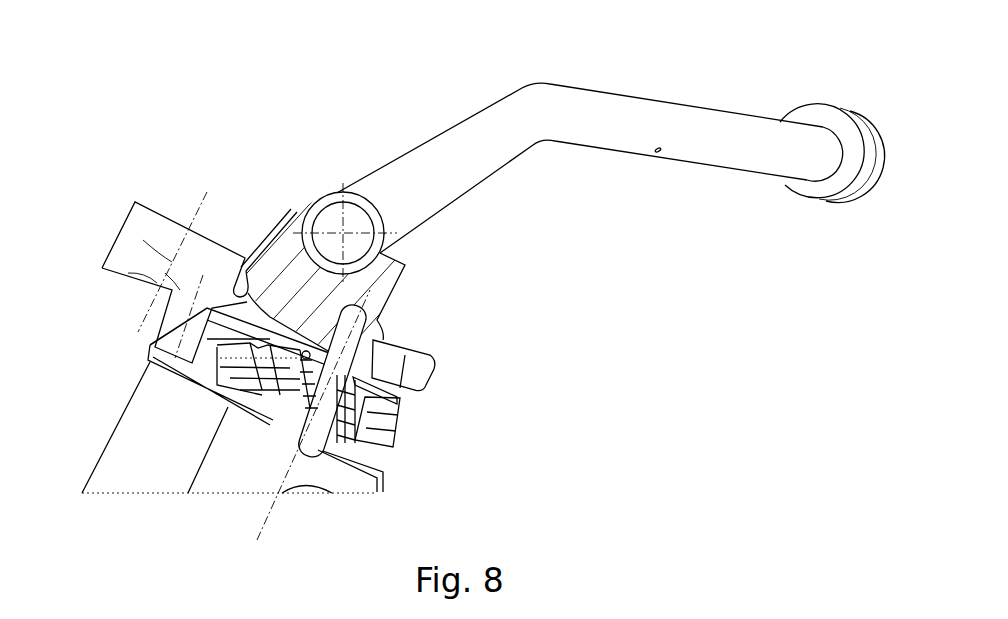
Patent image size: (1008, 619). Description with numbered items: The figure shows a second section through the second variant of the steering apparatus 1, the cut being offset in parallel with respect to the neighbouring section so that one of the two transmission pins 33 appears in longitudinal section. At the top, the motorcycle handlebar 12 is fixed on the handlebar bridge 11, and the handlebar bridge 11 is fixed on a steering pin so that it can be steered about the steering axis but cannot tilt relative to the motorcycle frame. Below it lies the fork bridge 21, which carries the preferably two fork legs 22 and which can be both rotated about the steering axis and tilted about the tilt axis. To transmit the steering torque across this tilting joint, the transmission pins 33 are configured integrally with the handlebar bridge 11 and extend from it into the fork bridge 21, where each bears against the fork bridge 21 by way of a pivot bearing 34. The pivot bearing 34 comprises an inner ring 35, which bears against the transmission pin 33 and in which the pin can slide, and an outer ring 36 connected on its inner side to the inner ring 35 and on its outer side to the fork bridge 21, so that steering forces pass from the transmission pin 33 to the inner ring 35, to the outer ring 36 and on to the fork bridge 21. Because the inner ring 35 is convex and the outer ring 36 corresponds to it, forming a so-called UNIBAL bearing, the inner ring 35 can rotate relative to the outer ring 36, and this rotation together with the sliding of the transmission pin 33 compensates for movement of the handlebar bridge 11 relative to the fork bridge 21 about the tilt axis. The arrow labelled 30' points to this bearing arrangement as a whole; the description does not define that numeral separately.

The steering apparatus 1 is at (78, 116).
The handlebar bridge 11 is at (297, 210).
The motorcycle handlebar 12 is at (683, 123).
The fork bridge 21 is at (385, 425).
The fork legs 22 is at (147, 410).
The locking unit 30' is at (367, 415).
The transmission pin 33 is at (320, 424).
The pivot bearing 34 is at (374, 370).
The inner ring 35 is at (305, 424).
The outer ring 36 is at (383, 410).